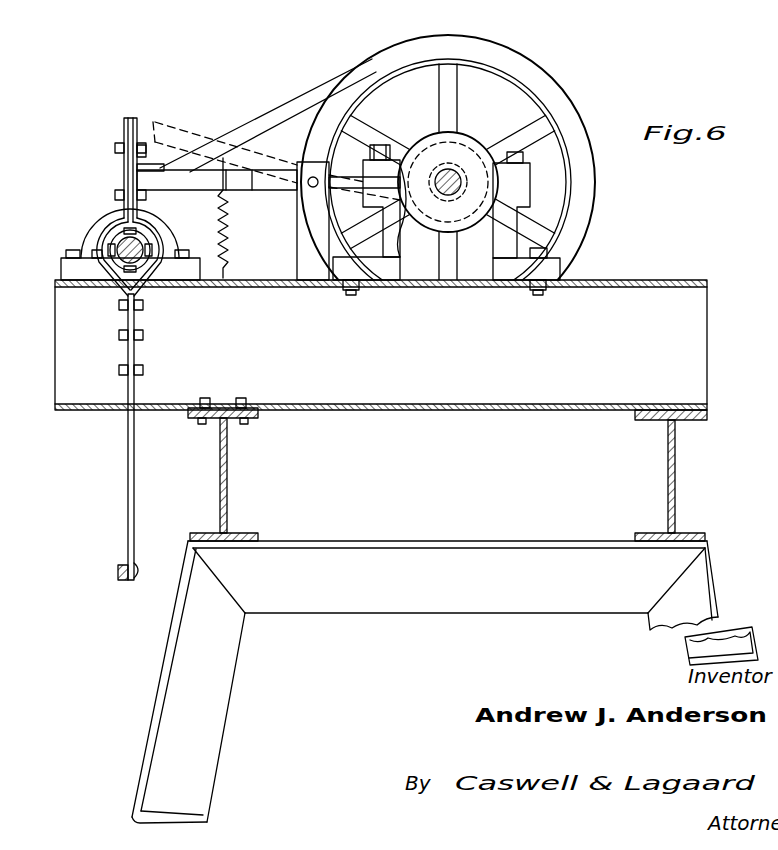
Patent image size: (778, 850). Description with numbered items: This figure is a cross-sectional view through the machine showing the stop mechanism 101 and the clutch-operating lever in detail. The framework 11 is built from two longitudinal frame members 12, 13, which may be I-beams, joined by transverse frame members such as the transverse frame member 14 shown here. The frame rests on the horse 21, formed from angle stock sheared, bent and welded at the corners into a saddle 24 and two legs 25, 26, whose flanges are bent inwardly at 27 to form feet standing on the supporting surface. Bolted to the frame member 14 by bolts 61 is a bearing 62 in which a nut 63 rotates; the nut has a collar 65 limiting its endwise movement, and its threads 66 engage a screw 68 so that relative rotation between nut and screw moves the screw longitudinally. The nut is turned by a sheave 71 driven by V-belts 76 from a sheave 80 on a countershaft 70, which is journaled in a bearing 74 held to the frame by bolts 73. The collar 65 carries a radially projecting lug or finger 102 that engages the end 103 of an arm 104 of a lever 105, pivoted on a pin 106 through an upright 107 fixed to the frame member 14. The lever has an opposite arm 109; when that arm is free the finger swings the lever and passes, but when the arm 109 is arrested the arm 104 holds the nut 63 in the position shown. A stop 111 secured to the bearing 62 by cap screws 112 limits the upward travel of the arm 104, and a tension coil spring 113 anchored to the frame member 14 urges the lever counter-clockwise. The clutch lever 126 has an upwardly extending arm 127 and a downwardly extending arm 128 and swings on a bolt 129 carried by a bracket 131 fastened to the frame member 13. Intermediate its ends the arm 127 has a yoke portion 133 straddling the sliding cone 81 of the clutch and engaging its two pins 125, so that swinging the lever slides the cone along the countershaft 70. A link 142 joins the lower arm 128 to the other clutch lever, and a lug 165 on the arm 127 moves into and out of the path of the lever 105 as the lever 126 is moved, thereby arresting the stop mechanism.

The framework 11 is at (707, 415).
The longitudinal frame member 12 is at (668, 478).
The longitudinal frame member 13 is at (227, 480).
The transverse frame member 14 is at (676, 352).
The horse 21 is at (140, 765).
The saddle 24 is at (377, 598).
The leg 25 is at (205, 713).
The leg 26 is at (712, 578).
The foot 27 is at (180, 815).
The bolt 61 is at (350, 295).
The bearing 62 is at (528, 176).
The nut 63 is at (503, 153).
The collar 65 is at (475, 138).
The threads 66 is at (448, 182).
The screw 68 is at (450, 195).
The countershaft 70 is at (122, 258).
The sheave 71 is at (490, 55).
The bolt 73 is at (70, 252).
The bearing 74 is at (72, 266).
The V-belt 76 is at (252, 118).
The sheave 80 is at (97, 222).
The sliding cone 81 is at (126, 240).
The stop mechanism 101 is at (485, 150).
The lug or finger 102 is at (396, 150).
The end of arm 103 is at (395, 190).
The arm 104 is at (362, 176).
The lever 105 is at (300, 175).
The pin 106 is at (308, 186).
The upright 107 is at (315, 232).
The arm 109 is at (190, 172).
The stop 111 is at (368, 175).
The cap screw 112 is at (378, 145).
The tension coil spring 113 is at (228, 248).
The pin 125 is at (92, 252).
The lever 126 is at (128, 428).
The arm 127 is at (128, 125).
The arm 128 is at (128, 505).
The bolt 129 is at (118, 372).
The bracket 131 is at (172, 405).
The yoke portion 133 is at (118, 280).
The link 142 is at (115, 565).
The lug 165 is at (150, 164).